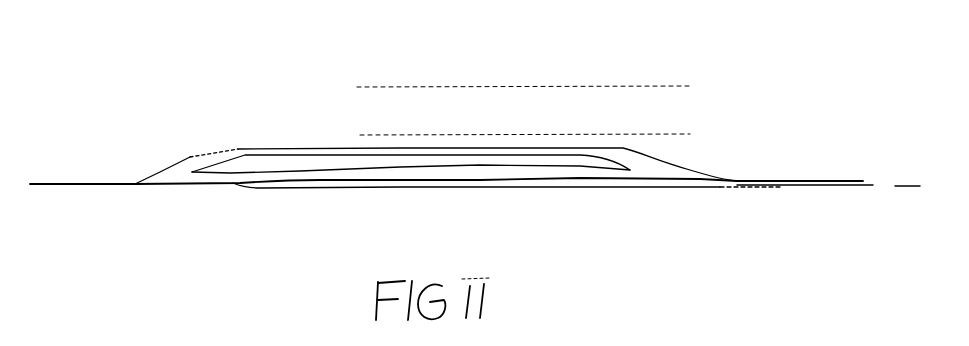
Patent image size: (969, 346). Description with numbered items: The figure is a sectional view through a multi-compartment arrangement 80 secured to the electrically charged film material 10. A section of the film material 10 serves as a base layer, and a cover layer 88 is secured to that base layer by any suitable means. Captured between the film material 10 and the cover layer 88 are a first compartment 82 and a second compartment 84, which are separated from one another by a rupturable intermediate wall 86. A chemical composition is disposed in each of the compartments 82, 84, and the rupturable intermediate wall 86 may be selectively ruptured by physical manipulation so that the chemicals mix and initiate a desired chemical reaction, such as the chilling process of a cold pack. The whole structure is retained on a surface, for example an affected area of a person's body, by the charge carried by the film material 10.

The electrically charged film material 10 is at (102, 185).
The multi-compartment arrangement 80 is at (447, 116).
The first compartment 82 is at (317, 167).
The second compartment 84 is at (408, 175).
The rupturable intermediate wall 86 is at (443, 157).
The cover layer 88 is at (672, 98).